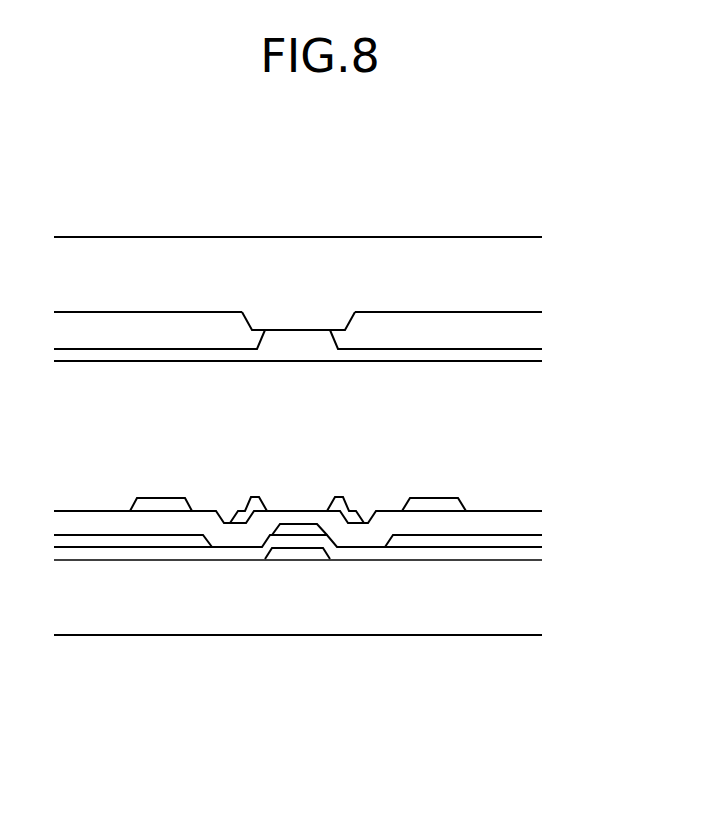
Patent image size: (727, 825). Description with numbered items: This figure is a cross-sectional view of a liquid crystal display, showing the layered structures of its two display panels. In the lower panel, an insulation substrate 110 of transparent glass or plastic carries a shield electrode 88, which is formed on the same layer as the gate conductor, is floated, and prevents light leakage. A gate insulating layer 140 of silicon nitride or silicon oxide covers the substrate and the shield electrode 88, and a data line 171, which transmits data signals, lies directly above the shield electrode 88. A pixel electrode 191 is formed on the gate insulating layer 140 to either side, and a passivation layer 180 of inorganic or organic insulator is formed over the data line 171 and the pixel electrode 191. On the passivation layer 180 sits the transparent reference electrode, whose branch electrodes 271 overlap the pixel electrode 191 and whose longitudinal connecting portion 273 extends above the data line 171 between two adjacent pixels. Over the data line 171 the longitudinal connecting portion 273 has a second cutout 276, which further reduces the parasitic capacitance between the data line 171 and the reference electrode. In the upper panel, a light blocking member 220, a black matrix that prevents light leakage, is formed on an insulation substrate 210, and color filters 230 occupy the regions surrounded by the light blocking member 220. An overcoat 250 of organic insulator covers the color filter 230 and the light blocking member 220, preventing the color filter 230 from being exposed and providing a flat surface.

The insulation substrate 110 is at (95, 610).
The gate insulating layer 140 is at (505, 555).
The shield electrode 88 is at (290, 550).
The data line 171 is at (305, 540).
The passivation layer 180 is at (230, 537).
The pixel electrode 191 is at (150, 540).
The branch electrode 271 is at (160, 505).
The longitudinal connecting portion 273 is at (255, 503).
The second cutout 276 is at (265, 505).
The insulation substrate 210 is at (213, 267).
The light blocking member 220 is at (300, 320).
The color filter 230 is at (133, 327).
The overcoat 250 is at (408, 352).